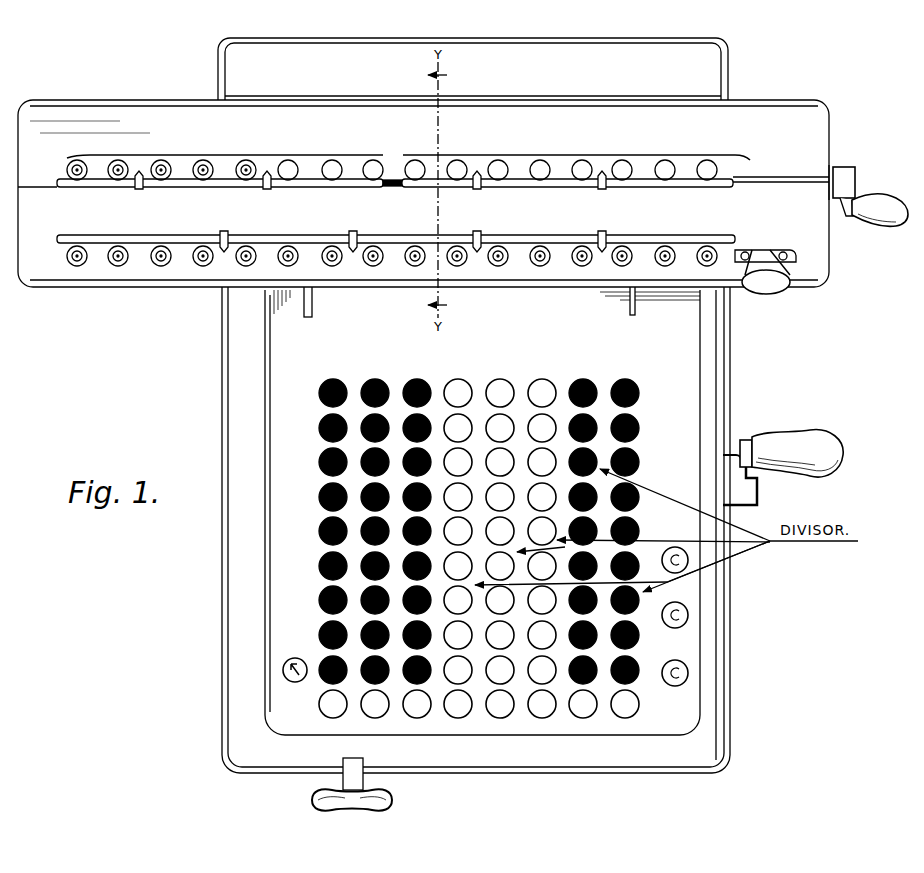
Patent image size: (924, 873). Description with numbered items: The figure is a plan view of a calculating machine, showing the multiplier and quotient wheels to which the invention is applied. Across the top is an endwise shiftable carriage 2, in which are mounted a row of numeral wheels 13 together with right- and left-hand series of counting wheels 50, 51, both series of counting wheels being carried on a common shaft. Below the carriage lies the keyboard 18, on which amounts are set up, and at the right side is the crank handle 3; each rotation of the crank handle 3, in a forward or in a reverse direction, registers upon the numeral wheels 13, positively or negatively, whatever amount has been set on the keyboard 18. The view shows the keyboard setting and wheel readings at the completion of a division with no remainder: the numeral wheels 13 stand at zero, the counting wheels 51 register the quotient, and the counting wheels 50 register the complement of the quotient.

The carriage 2 is at (818, 124).
The crank handle 3 is at (805, 431).
The numeral wheels 13 is at (161, 267).
The keyboard 18 is at (476, 401).
The right-hand series of counting wheels 50 is at (707, 159).
The left-hand series of counting wheels 51 is at (118, 159).